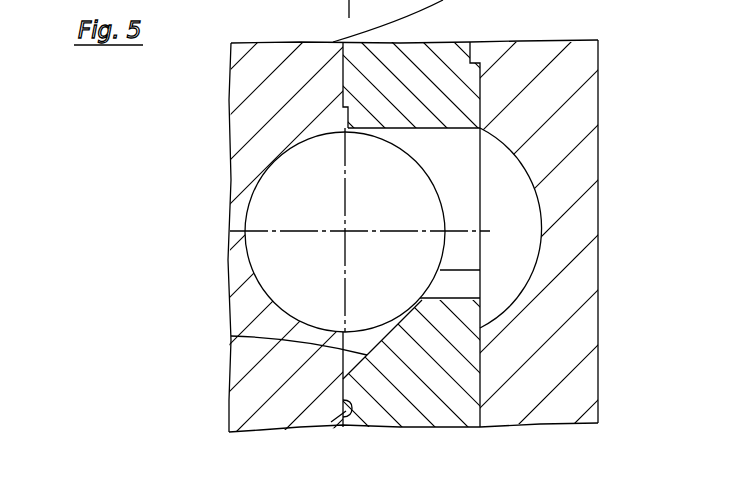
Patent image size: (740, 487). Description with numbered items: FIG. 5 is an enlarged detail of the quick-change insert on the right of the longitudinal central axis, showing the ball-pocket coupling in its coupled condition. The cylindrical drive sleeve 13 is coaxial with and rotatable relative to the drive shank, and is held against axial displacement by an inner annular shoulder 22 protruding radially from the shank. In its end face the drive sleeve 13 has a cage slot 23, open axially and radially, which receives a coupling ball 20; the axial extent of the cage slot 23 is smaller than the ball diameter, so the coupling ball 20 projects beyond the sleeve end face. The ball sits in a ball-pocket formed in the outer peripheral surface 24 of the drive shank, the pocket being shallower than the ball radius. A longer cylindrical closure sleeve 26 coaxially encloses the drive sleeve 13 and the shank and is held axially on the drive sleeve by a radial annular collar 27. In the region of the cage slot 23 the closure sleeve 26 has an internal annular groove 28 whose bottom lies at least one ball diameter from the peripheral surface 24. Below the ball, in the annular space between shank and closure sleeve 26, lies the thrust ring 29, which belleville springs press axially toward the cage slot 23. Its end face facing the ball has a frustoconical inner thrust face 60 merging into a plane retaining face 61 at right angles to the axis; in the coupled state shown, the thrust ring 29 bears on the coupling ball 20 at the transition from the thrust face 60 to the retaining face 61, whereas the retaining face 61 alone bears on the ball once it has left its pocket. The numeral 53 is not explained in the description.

The drive sleeve 13 is at (443, 51).
The coupling ball 20 is at (389, 201).
The inner annular shoulder 22 is at (345, 113).
The cage slot 23 is at (463, 161).
The outer peripheral surface 24 is at (333, 426).
The closure sleeve 26 is at (553, 325).
The radial annular collar 27 is at (498, 44).
The annular groove 28 is at (520, 262).
The thrust ring 29 is at (433, 377).
The line 53 is at (388, 21).
The frustoconical inner thrust face 60 is at (340, 337).
The plane retaining face 61 is at (446, 298).